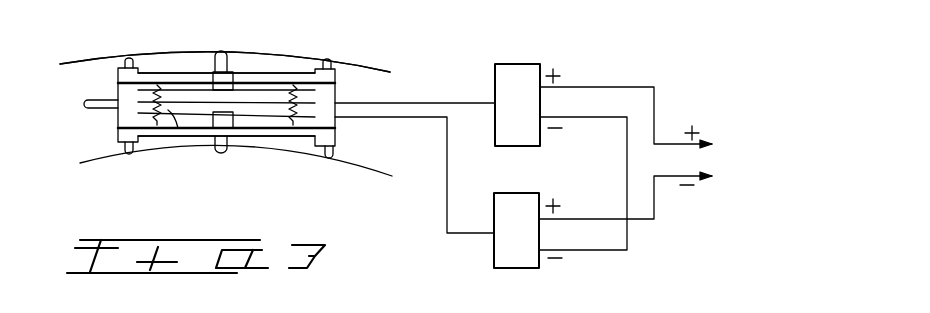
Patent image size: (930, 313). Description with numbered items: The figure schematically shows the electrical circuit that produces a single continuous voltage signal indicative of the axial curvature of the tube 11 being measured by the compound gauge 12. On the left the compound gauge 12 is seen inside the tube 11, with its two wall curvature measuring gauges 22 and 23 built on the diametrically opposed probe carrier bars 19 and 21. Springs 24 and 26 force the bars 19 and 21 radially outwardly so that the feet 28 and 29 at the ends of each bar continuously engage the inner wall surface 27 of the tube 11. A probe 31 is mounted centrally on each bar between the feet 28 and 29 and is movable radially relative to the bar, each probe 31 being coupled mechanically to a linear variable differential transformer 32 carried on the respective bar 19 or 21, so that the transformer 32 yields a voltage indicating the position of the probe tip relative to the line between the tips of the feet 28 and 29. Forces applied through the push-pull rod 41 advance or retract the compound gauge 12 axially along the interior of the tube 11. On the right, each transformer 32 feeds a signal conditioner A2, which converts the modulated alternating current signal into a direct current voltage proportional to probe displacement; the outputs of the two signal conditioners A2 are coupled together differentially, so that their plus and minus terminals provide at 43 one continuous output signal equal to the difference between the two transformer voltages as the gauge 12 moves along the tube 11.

The tube 11 is at (372, 170).
The compound gauge 12 is at (355, 80).
The probe carrier bar 19 is at (190, 73).
The probe carrier bar 21 is at (257, 137).
The wall curvature measuring gauge 22 is at (298, 43).
The wall curvature measuring gauge 23 is at (208, 163).
The spring 24 is at (168, 112).
The spring 26 is at (300, 122).
The inner wall surface 27 is at (106, 60).
The foot 28 is at (131, 58).
The foot 29 is at (335, 62).
The probe 31 is at (228, 58).
The linear variable differential transformer 32 is at (213, 93).
The push-pull rod 41 is at (98, 112).
The output signal 43 is at (718, 158).
The signal conditioner A2 is at (497, 64).